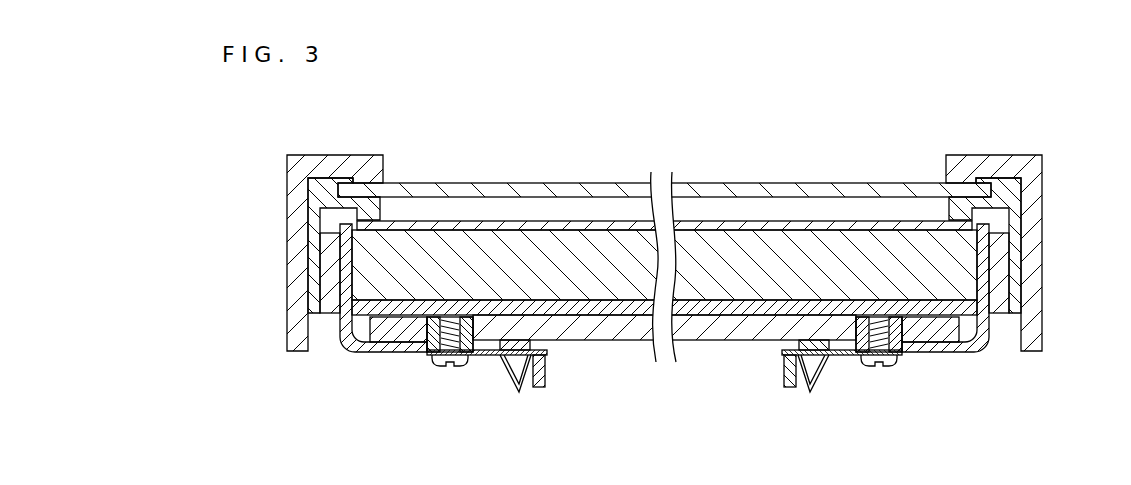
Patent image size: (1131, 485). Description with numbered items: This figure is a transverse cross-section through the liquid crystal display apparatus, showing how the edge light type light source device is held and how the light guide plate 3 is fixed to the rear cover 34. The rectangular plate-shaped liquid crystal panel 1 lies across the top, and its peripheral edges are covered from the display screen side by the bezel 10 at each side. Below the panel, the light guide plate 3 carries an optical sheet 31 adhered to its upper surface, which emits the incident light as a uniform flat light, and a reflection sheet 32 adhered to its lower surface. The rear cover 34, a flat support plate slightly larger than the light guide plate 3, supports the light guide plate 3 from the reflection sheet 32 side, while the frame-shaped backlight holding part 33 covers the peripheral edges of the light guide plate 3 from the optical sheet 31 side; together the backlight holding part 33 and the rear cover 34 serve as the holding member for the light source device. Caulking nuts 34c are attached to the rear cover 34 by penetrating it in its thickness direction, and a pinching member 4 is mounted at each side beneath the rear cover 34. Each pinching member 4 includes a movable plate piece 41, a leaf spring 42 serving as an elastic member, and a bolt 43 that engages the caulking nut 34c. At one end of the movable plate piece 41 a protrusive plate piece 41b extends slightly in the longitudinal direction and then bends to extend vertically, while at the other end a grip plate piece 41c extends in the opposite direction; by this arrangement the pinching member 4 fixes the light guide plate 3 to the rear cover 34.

The liquid crystal panel 1 is at (610, 186).
The light guide plate 3 is at (717, 236).
The pinching member 4 is at (473, 385).
The bezel 10 is at (287, 216).
The optical sheet 31 is at (512, 224).
The reflection sheet 32 is at (717, 316).
The backlight holding part 33 is at (327, 203).
The rear cover 34 is at (329, 302).
The caulking nut 34c is at (420, 343).
The movable plate piece 41 is at (498, 356).
The protrusive plate piece 41b is at (362, 354).
The grip plate piece 41c is at (543, 388).
The leaf spring 42 is at (514, 393).
The bolt 43 is at (440, 367).